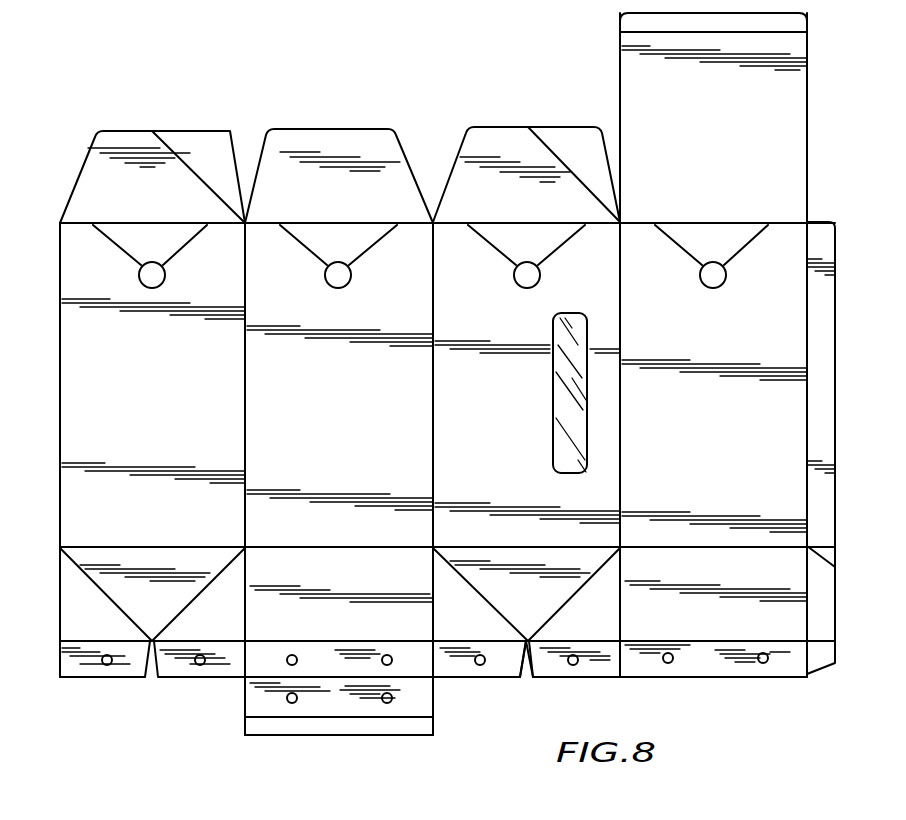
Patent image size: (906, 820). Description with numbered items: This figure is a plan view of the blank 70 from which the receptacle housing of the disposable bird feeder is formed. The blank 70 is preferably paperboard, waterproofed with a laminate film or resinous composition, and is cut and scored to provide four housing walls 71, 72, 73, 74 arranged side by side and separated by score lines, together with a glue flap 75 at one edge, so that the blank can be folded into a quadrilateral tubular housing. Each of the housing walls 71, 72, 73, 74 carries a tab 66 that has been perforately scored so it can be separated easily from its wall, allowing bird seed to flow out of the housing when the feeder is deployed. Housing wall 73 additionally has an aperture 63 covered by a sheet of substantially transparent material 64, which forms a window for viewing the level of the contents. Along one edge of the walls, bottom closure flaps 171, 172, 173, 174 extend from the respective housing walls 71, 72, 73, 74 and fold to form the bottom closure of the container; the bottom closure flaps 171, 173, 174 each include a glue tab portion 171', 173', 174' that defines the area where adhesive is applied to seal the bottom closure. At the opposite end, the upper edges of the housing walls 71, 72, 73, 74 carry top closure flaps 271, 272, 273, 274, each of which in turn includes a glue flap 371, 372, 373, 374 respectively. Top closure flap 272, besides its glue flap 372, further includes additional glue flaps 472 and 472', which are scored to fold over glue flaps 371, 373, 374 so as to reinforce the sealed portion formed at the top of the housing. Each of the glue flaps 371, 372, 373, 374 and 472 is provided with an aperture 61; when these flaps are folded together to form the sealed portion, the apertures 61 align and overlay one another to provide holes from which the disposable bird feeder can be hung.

The apertures 61 is at (110, 666).
The aperture 63 is at (553, 438).
The sheet of substantially transparent material 64 is at (581, 431).
The tab 66 is at (160, 252).
The blank 70 is at (511, 683).
The housing wall 71 is at (153, 402).
The housing wall 72 is at (346, 399).
The housing wall 73 is at (512, 401).
The housing wall 74 is at (715, 414).
The glue flap 75 is at (830, 414).
The bottom closure flap 171 is at (152, 177).
The glue tab portion 171' is at (198, 177).
The bottom closure flap 172 is at (348, 206).
The bottom closure flap 173 is at (526, 174).
The glue tab portion 173' is at (574, 174).
The bottom closure flap 174 is at (713, 116).
The glue tab portion 174' is at (683, 36).
The top closure flap 271 is at (167, 616).
The top closure flap 272 is at (340, 632).
The top closure flap 273 is at (535, 609).
The top closure flap 274 is at (712, 626).
The glue flap 371 is at (91, 678).
The glue flap 372 is at (330, 676).
The glue flap 373 is at (490, 678).
The glue flap 374 is at (710, 667).
The additional glue flap 472 is at (339, 697).
The additional glue flap 472' is at (339, 746).